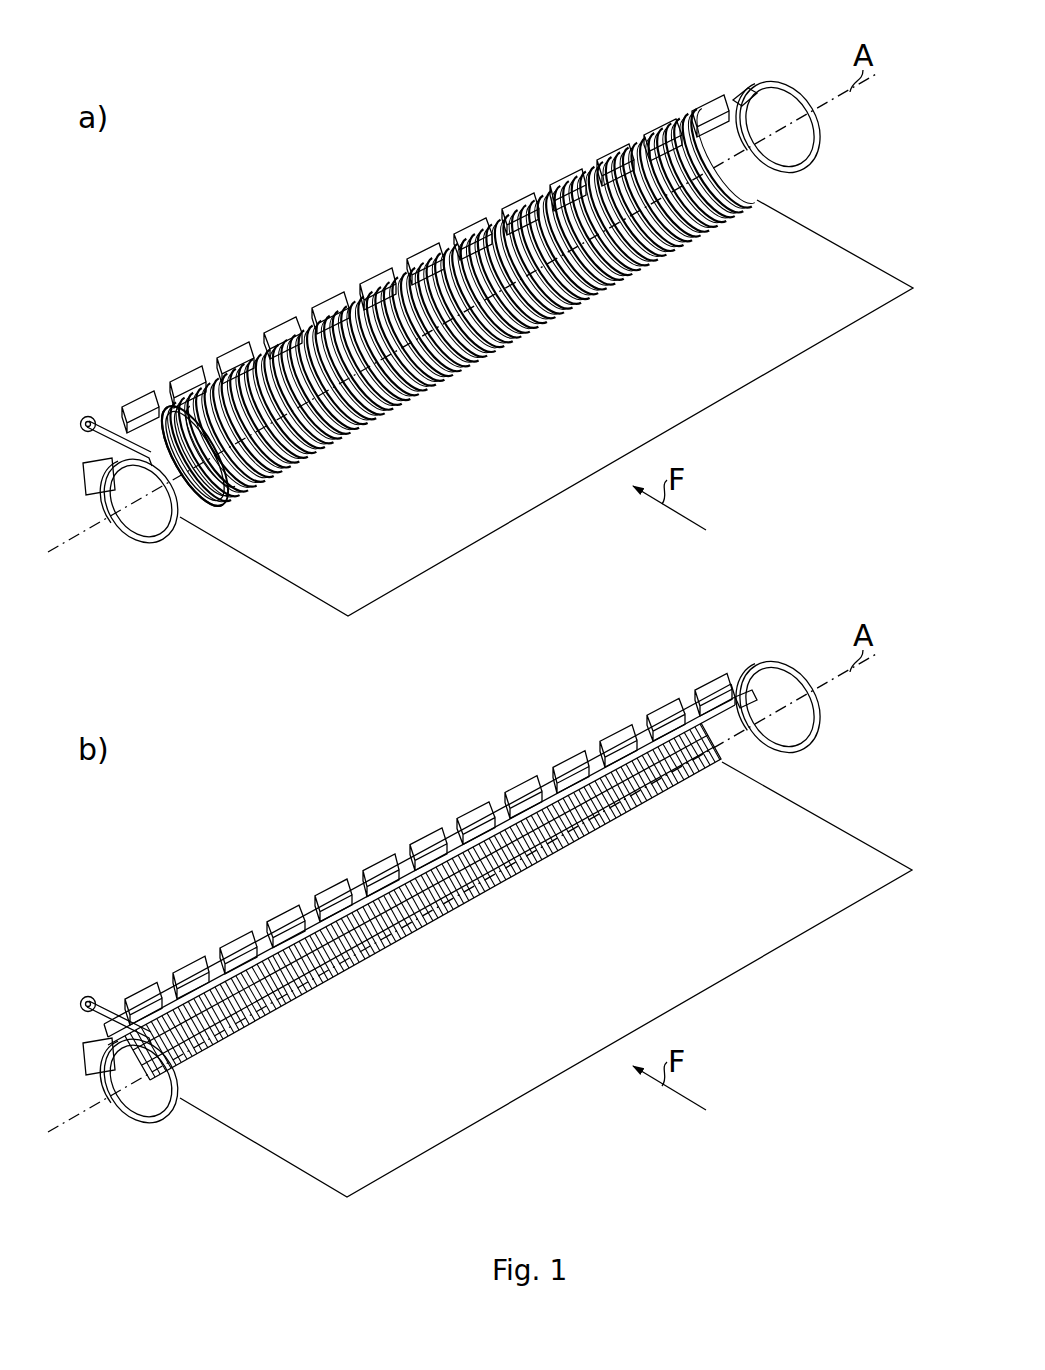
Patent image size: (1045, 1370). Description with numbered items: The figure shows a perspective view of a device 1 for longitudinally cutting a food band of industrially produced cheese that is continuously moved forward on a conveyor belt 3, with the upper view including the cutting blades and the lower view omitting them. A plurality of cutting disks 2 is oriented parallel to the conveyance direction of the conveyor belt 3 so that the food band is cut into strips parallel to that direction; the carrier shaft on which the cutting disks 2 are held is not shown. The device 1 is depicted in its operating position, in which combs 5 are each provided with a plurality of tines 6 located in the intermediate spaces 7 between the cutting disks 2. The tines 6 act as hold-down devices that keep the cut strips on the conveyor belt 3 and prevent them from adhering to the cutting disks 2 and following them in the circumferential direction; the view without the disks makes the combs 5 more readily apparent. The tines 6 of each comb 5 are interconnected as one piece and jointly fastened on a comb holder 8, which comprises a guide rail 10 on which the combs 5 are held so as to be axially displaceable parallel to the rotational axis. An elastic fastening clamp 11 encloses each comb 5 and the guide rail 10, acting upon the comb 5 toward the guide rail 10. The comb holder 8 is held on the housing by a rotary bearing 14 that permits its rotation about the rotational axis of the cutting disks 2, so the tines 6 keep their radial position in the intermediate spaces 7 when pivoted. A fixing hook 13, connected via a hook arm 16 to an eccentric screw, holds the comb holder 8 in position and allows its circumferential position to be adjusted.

The device for longitudinal cutting having a blade roller 1 is at (291, 137).
The cutting disk 2 is at (468, 345).
The conveyor belt 3 is at (352, 1166).
The comb 5 is at (582, 884).
The tines 6 is at (532, 868).
The intermediate space 7 is at (448, 314).
The comb holder 8 is at (605, 706).
The guide rail 10 is at (704, 706).
The fastening clamp 11 is at (523, 788).
The fixing hook 13 is at (126, 432).
The rotary bearing 14 is at (779, 84).
The hook arm 16 is at (107, 447).